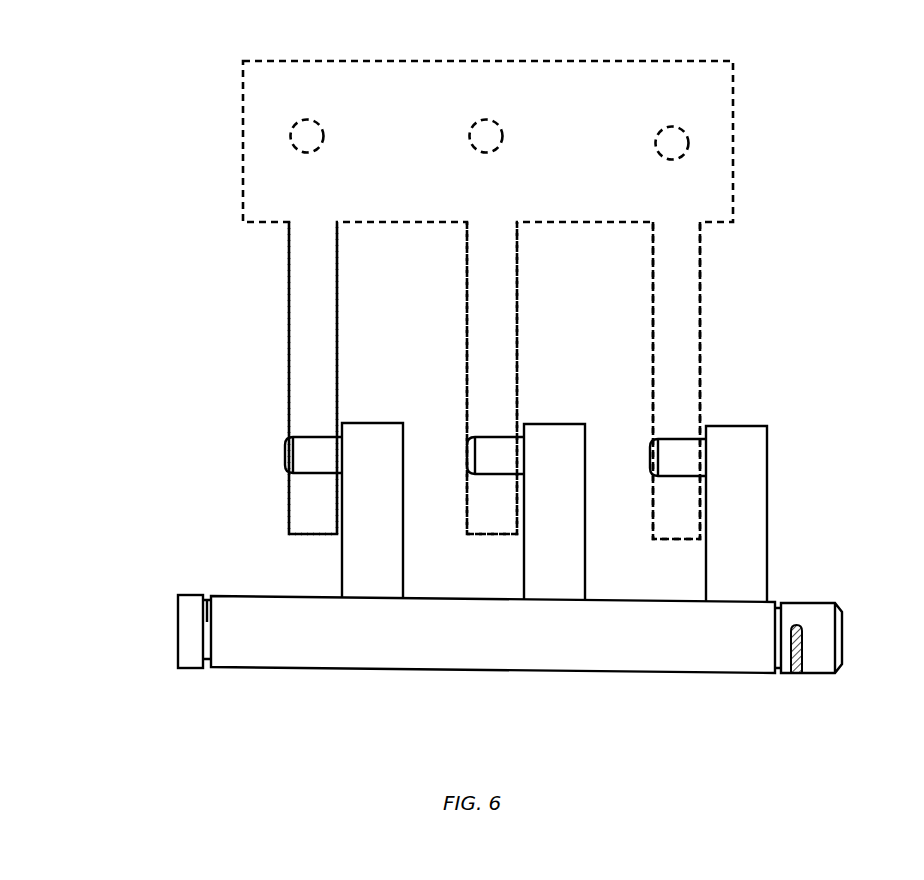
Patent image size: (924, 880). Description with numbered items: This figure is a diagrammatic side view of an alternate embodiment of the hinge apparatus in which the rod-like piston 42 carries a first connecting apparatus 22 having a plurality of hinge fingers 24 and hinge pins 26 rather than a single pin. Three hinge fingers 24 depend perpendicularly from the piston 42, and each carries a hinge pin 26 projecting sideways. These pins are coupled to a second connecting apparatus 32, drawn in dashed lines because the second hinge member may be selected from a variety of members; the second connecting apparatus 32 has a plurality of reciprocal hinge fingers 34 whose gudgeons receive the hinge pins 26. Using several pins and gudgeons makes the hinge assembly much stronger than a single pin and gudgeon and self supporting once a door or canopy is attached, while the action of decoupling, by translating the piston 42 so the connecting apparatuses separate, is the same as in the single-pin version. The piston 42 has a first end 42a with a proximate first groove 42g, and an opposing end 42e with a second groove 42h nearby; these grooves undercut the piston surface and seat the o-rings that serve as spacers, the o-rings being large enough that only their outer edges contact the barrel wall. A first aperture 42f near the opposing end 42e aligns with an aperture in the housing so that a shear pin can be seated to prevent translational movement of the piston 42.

The first connecting apparatus 22 is at (533, 545).
The hinge finger 24 is at (378, 448).
The hinge pin 26 is at (312, 448).
The second connecting apparatus 32 is at (268, 283).
The reciprocal hinge finger 34 is at (328, 317).
The piston 42 is at (533, 645).
The first end 42a is at (188, 643).
The opposing end 42e is at (843, 638).
The first aperture 42f is at (795, 645).
The first groove 42g is at (208, 600).
The second groove 42h is at (780, 660).